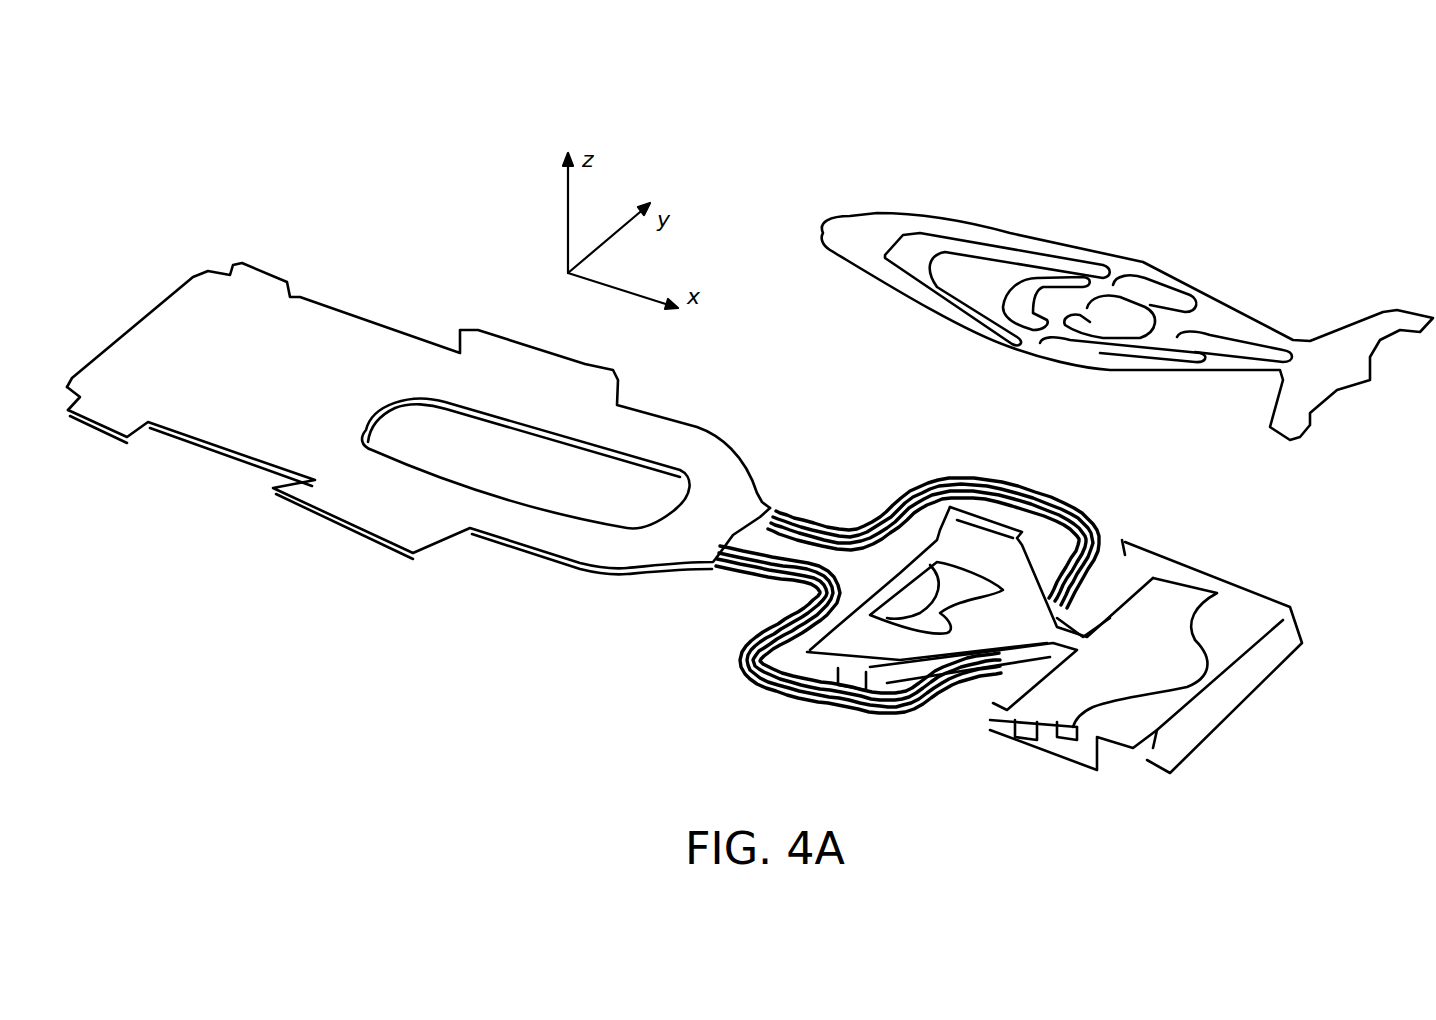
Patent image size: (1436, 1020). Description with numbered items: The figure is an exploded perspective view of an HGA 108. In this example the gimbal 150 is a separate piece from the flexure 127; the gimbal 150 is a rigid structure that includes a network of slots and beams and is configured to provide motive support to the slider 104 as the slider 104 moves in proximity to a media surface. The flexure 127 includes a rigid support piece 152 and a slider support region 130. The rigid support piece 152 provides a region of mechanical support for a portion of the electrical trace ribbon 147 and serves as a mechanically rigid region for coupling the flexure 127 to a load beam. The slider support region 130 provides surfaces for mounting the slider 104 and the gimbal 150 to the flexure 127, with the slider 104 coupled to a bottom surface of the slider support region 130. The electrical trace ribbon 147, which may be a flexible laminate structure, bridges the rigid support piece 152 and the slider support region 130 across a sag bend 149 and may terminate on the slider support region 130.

The slider 104 is at (1080, 750).
The HGA 108 is at (807, 138).
The flexure 127 is at (418, 492).
The slider support region 130 is at (1082, 651).
The electrical trace ribbon 147 is at (948, 490).
The sag bend 149 is at (735, 595).
The gimbal 150 is at (1143, 262).
The rigid support piece 152 is at (387, 508).